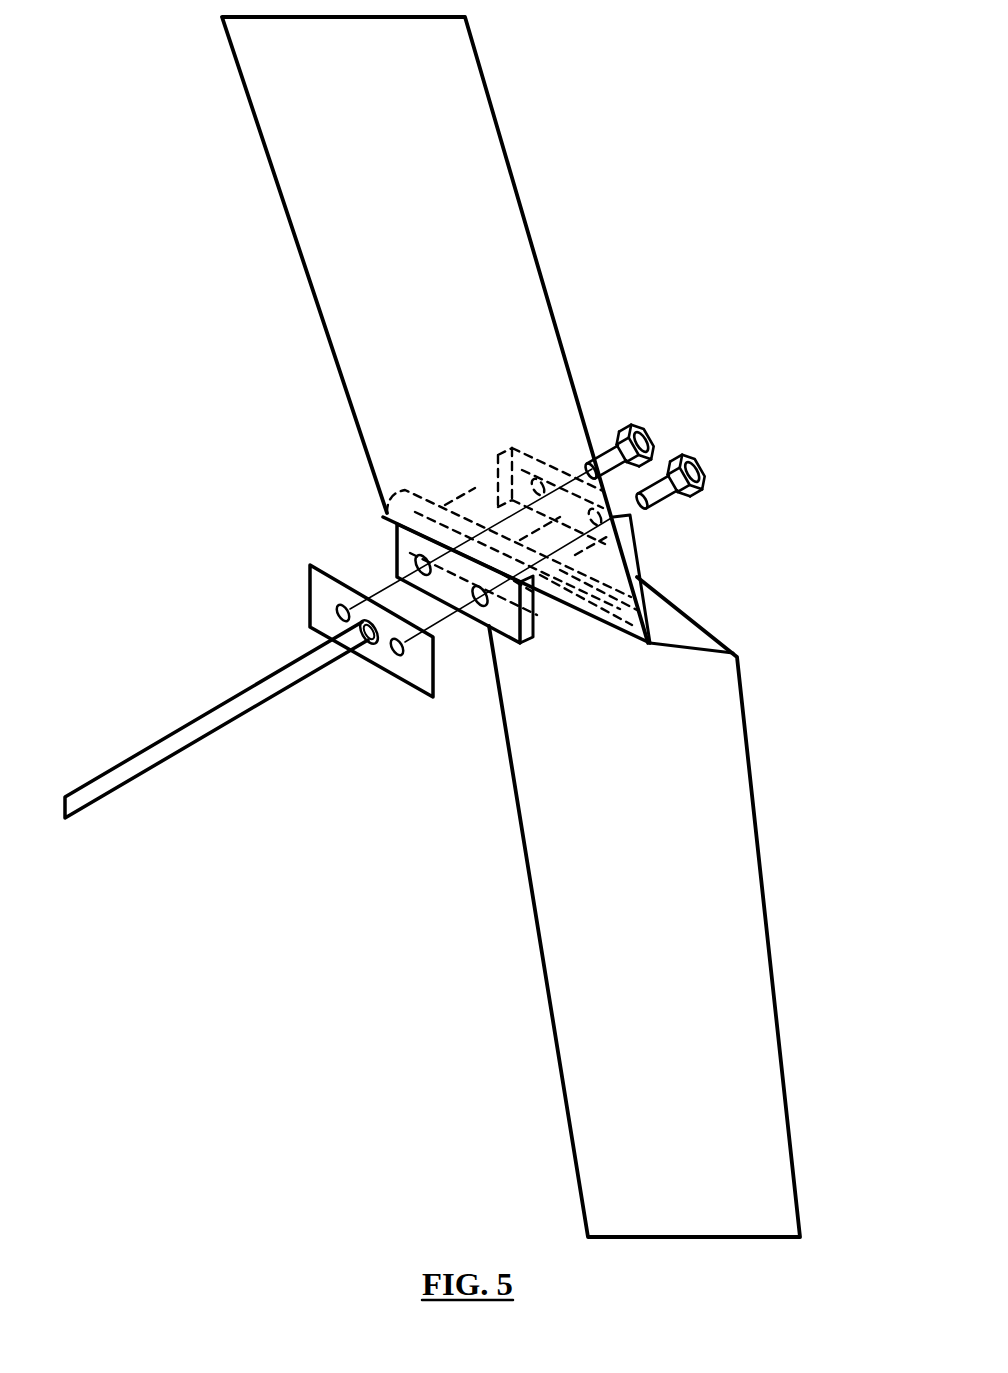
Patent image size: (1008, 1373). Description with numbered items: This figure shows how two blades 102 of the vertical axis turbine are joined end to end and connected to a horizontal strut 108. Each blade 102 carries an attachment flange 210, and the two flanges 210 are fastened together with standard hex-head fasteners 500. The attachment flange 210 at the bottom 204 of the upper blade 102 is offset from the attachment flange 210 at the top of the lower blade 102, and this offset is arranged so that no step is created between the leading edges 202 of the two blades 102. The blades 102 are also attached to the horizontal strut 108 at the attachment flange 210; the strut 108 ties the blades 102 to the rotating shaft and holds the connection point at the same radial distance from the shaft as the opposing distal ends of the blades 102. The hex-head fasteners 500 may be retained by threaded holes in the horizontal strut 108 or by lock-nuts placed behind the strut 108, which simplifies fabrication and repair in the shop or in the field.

The blade 102 is at (342, 278).
The horizontal strut 108 is at (173, 753).
The leading edge 202 is at (480, 503).
The bottom of the upper blade 204 is at (386, 517).
The attachment flange 210 is at (630, 545).
The hex-head fastener 500 is at (645, 430).